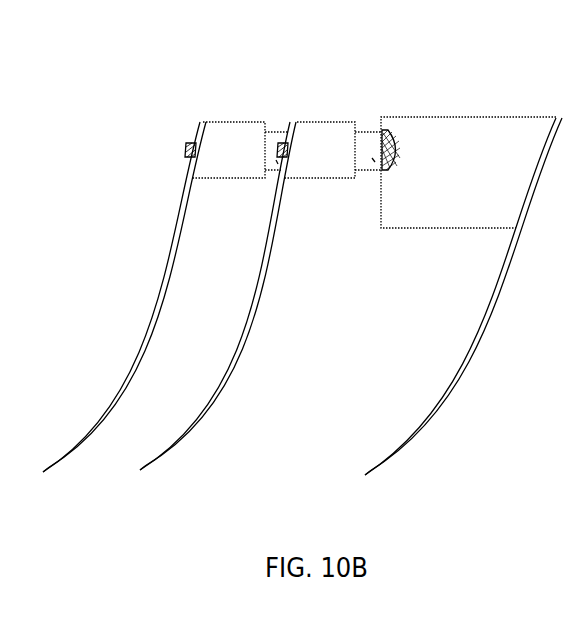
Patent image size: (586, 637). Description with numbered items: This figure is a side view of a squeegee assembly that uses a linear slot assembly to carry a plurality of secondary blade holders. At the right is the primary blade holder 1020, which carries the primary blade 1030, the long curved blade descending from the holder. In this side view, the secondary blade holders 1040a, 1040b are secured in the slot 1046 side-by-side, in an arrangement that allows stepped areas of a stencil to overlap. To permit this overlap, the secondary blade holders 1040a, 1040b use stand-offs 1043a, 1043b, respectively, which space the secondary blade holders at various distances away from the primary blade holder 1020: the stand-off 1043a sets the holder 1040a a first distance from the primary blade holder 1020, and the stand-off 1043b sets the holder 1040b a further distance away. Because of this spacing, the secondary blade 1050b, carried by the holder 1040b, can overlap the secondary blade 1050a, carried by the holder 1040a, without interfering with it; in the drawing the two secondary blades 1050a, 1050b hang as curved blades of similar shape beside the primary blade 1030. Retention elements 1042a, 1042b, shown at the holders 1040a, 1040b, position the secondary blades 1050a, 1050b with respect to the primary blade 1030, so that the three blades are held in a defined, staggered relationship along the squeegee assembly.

The primary blade holder 1020 is at (488, 172).
The primary blade 1030 is at (416, 428).
The secondary blade holder 1040a is at (330, 142).
The secondary blade holder 1040b is at (218, 135).
The retention element 1042a is at (281, 130).
The retention element 1042b is at (176, 130).
The stand-off 1043a is at (372, 160).
The stand-off 1043b is at (276, 162).
The slot 1046 is at (398, 130).
The secondary blade 1050a is at (203, 418).
The secondary blade 1050b is at (110, 411).